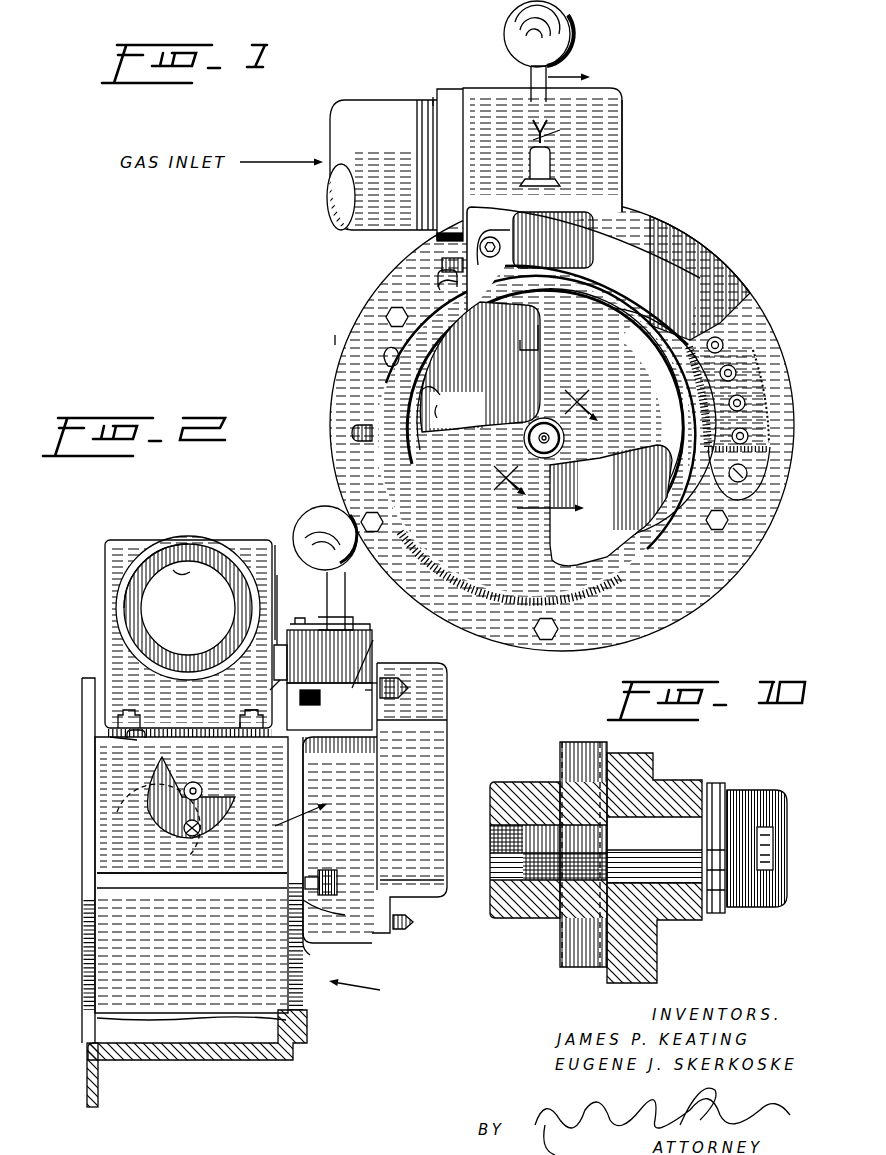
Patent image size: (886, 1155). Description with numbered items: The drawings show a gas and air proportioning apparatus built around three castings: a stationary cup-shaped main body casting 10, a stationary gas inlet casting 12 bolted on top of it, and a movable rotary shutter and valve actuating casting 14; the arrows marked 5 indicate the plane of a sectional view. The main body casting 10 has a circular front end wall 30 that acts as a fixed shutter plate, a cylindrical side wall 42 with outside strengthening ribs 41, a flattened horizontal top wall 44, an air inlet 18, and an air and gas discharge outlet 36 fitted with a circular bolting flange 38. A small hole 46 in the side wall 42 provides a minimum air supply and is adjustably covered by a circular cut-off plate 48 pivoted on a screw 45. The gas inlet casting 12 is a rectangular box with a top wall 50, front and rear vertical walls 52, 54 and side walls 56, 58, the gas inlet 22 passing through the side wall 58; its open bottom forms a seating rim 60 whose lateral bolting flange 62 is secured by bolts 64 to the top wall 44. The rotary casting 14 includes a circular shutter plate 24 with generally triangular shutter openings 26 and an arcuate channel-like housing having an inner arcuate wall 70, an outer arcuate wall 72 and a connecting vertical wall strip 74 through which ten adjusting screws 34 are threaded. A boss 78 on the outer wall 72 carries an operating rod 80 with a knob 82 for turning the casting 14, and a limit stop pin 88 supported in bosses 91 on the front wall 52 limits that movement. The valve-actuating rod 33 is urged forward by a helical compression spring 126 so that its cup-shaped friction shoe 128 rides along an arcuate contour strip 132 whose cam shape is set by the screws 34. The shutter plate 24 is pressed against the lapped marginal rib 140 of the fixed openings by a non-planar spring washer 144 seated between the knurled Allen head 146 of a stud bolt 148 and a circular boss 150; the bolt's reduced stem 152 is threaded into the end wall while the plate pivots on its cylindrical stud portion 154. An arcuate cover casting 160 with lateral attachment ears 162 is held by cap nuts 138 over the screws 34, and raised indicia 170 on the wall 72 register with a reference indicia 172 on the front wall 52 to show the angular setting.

In FIG. 1, the section line 5- 5 is at (541, 239).
In FIG. 1, the main body casting 10 is at (558, 448).
In FIG. 2, the main body casting 10 is at (197, 917).
In FIG. 1, the gas inlet casting 12 is at (590, 156).
In FIG. 2, the gas inlet casting 12 is at (245, 706).
In FIG. 2, the rotary shutter and valve actuating casting 14 is at (287, 818).
In FIG. 1, the air inlet 18 is at (518, 519).
In FIG. 2, the air inlet 18 is at (366, 991).
In FIG. 1, the gas inlet 22 is at (433, 97).
In FIG. 2, the gas inlet 22 is at (173, 570).
In FIG. 1, the shutter plate 24 is at (553, 362).
In FIG. 1, the shutter openings 26 is at (420, 392).
In FIG. 1, the front end wall 30 is at (447, 368).
In FIG. 10, the front end wall 30 is at (590, 803).
In FIG. 2, the valve-actuating rod 33 is at (259, 697).
In FIG. 1, the adjusting screws 34 is at (727, 373).
In FIG. 2, the air and gas discharge outlet 36 is at (98, 1037).
In FIG. 1, the bolting flange 38 is at (347, 387).
In FIG. 2, the bolting flange 38 is at (84, 692).
In FIG. 1, the strengthening ribs 41 is at (357, 433).
In FIG. 2, the strengthening ribs 41 is at (120, 883).
In FIG. 2, the side wall 42 is at (247, 1047).
In FIG. 1, the top wall 44 is at (457, 282).
In FIG. 2, the top wall 44 is at (137, 740).
In FIG. 1, the screw 45 is at (335, 339).
In FIG. 2, the small hole 46 is at (200, 784).
In FIG. 1, the circular cut-off plate 48 is at (393, 352).
In FIG. 2, the circular cut-off plate 48 is at (157, 778).
In FIG. 2, the top wall 50 is at (125, 540).
In FIG. 1, the front vertical wall 52 is at (597, 100).
In FIG. 2, the front vertical wall 52 is at (277, 540).
In FIG. 2, the rear vertical wall 54 is at (105, 603).
In FIG. 1, the side wall 56 is at (625, 123).
In FIG. 2, the side wall 56 is at (160, 593).
In FIG. 1, the side wall 58 is at (460, 127).
In FIG. 2, the side wall 58 is at (108, 555).
In FIG. 1, the seating rim 60 is at (403, 141).
In FIG. 2, the seating rim 60 is at (146, 560).
In FIG. 1, the lateral bolting flange 62 is at (440, 277).
In FIG. 2, the lateral bolting flange 62 is at (125, 732).
In FIG. 1, the bolts 64 is at (440, 265).
In FIG. 2, the bolts 64 is at (118, 712).
In FIG. 1, the inner arcuate wall 70 is at (678, 387).
In FIG. 2, the inner arcuate wall 70 is at (363, 830).
In FIG. 1, the outer arcuate wall 72 is at (668, 222).
In FIG. 1, the vertical wall strip 74 is at (683, 240).
In FIG. 2, the vertical wall strip 74 is at (377, 780).
In FIG. 1, the boss 78 is at (553, 192).
In FIG. 2, the boss 78 is at (352, 620).
In FIG. 1, the rod 80 is at (530, 90).
In FIG. 2, the rod 80 is at (342, 600).
In FIG. 1, the operating knob 82 is at (571, 35).
In FIG. 2, the operating knob 82 is at (321, 506).
In FIG. 2, the limit stop pin 88 is at (285, 633).
In FIG. 2, the bosses 91 is at (261, 676).
In FIG. 2, the helical compression spring 126 is at (329, 706).
In FIG. 2, the friction shoe 128 is at (373, 650).
In FIG. 2, the contour strip 132 is at (370, 690).
In FIG. 1, the cap nuts 138 is at (480, 248).
In FIG. 2, the cap nuts 138 is at (402, 680).
In FIG. 1, the raised marginal rib 140 is at (528, 464).
In FIG. 2, the spring washer 144 is at (328, 912).
In FIG. 10, the spring washer 144 is at (720, 787).
In FIG. 1, the knurled Allen head 146 is at (527, 440).
In FIG. 10, the knurled Allen head 146 is at (788, 833).
In FIG. 1, the stud bolt 148 is at (546, 418).
In FIG. 2, the stud bolt 148 is at (337, 880).
In FIG. 10, the stud bolt 148 is at (766, 905).
In FIG. 2, the circular boss 150 is at (310, 943).
In FIG. 10, the circular boss 150 is at (668, 903).
In FIG. 10, the reduced stem 152 is at (545, 837).
In FIG. 10, the cylindrical stud portion 154 is at (667, 833).
In FIG. 1, the cover casting 160 is at (637, 267).
In FIG. 2, the cover casting 160 is at (430, 876).
In FIG. 1, the lateral attachment ears 162 is at (512, 243).
In FIG. 2, the lateral attachment ears 162 is at (413, 703).
In FIG. 1, the raised indicia 170 is at (718, 292).
In FIG. 2, the raised indicia 170 is at (298, 625).
In FIG. 1, the reference indicia 172 is at (533, 140).
In FIG. 2, the reference indicia 172 is at (277, 580).